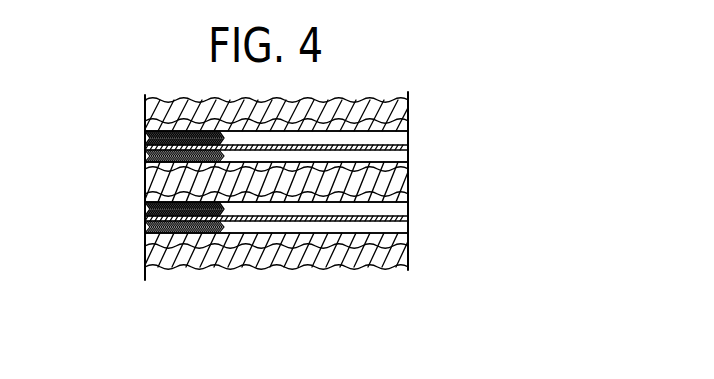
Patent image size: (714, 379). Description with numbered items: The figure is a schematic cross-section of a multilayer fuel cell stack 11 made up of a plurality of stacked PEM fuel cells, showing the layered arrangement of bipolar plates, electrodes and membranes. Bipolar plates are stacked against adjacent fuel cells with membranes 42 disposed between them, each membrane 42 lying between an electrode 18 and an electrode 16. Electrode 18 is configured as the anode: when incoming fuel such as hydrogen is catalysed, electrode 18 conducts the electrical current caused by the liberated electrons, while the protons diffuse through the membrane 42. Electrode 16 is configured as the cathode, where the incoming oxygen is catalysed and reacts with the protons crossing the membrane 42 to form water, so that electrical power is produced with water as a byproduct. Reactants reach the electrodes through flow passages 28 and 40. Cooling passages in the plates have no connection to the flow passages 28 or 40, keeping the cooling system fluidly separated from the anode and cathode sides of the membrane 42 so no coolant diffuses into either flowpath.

The multilayer fuel cell stack 11 is at (138, 267).
The electrode 16 is at (145, 157).
The electrode 18 is at (145, 137).
The flow passage 28 is at (408, 153).
The flow passage 40 is at (408, 208).
The membrane 42 is at (145, 148).